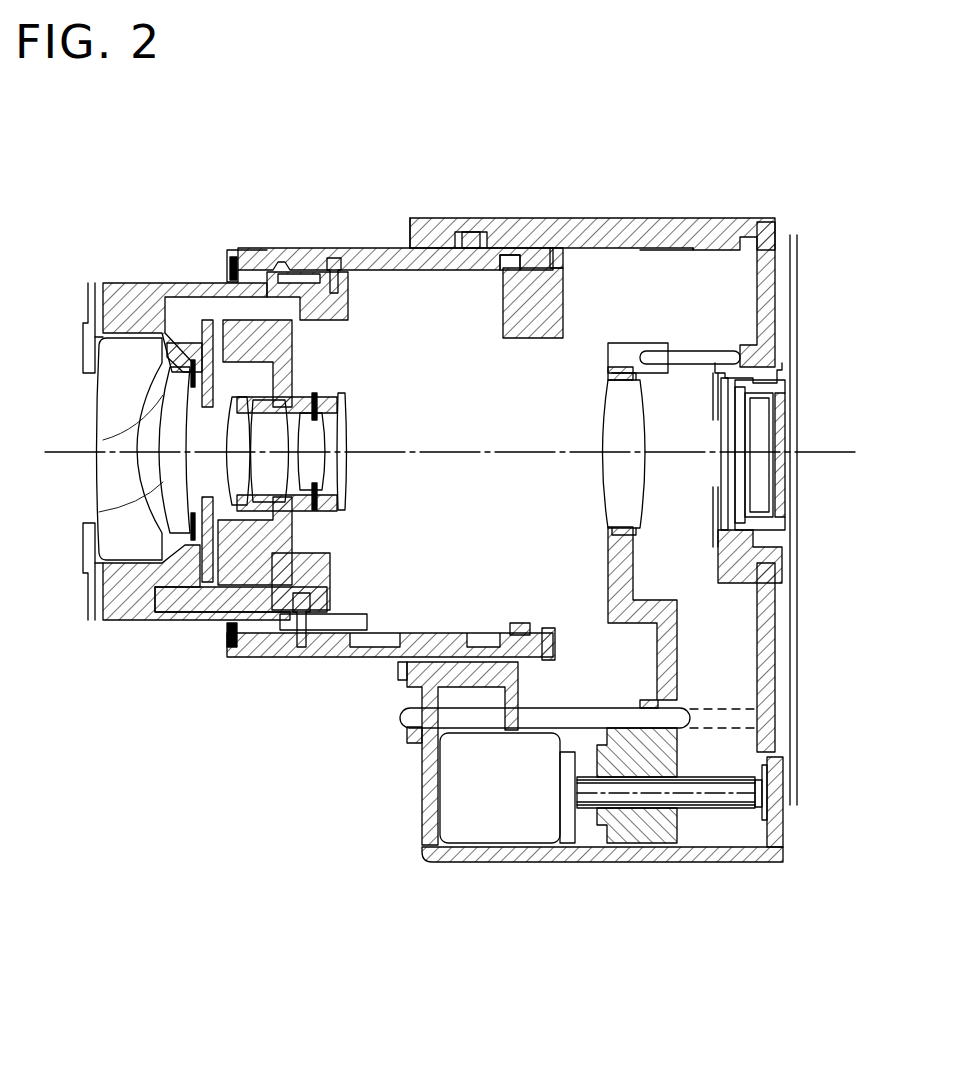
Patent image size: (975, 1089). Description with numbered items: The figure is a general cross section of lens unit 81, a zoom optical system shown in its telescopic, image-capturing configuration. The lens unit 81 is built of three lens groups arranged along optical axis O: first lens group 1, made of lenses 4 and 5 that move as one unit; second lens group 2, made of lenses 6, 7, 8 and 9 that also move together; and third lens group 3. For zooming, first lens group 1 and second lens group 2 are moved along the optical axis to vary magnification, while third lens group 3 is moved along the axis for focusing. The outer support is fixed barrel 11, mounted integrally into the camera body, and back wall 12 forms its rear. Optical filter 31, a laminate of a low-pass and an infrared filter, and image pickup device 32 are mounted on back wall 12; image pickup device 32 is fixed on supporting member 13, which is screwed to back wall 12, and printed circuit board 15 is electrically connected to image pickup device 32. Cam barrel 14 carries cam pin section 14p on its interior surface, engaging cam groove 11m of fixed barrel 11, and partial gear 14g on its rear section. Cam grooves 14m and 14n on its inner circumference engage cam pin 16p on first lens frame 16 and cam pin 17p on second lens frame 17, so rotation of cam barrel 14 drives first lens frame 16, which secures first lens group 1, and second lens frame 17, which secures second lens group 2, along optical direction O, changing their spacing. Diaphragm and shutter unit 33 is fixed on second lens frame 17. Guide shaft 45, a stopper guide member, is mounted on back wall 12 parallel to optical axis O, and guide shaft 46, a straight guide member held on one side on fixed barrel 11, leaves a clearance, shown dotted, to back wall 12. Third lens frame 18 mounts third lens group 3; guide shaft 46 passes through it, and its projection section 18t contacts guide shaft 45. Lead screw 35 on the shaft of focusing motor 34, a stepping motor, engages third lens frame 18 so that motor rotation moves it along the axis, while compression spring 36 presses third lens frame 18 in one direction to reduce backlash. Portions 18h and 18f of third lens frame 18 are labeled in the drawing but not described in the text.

The first lens group 1 is at (65, 430).
The second lens group 2 is at (355, 478).
The third lens group 3 is at (590, 428).
The lens 4 is at (105, 465).
The lens 5 is at (160, 500).
The lens 6 is at (230, 434).
The lens 7 is at (290, 420).
The lens 8 is at (300, 440).
The lens 9 is at (335, 451).
The fixed barrel 11 is at (600, 218).
The cam groove 11m is at (672, 220).
The back wall 12 is at (770, 300).
The supporting member 13 is at (782, 400).
The cam barrel 14 is at (300, 247).
The cam groove 14m is at (342, 256).
The cam pin section 14p is at (470, 232).
The partial gear 14g is at (530, 252).
The cam groove 14n is at (295, 655).
The printed circuit board 15 is at (775, 525).
The first lens frame 16 is at (143, 297).
The cam pin 16p is at (338, 320).
The second lens frame 17 is at (320, 563).
The cam pin 17p is at (280, 657).
The third lens frame 18 is at (607, 583).
The projection section 18t is at (618, 342).
The frame hole 18h is at (663, 706).
The lead screw 18f is at (655, 843).
The optical filter 31 is at (730, 485).
The image pickup device 32 is at (752, 430).
The diaphragm and shutter unit 33 is at (222, 612).
The focusing motor 34 is at (480, 825).
The lead screw 35 is at (737, 795).
The compression spring 36 is at (590, 843).
The guide shaft 45 is at (688, 350).
The guide shaft 46 is at (580, 717).
The lens unit 81 is at (400, 178).
The optical axis O is at (795, 452).